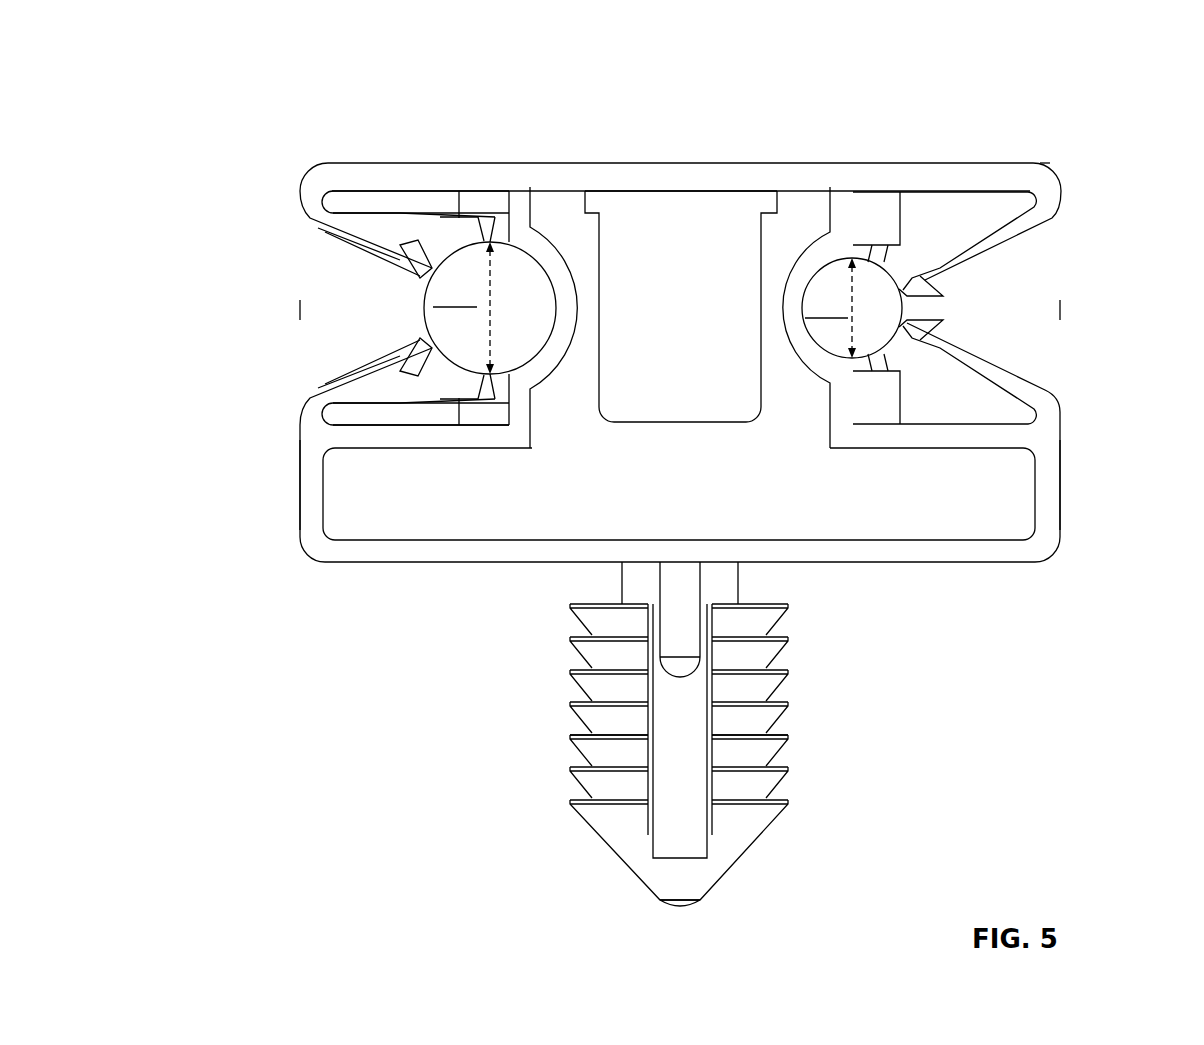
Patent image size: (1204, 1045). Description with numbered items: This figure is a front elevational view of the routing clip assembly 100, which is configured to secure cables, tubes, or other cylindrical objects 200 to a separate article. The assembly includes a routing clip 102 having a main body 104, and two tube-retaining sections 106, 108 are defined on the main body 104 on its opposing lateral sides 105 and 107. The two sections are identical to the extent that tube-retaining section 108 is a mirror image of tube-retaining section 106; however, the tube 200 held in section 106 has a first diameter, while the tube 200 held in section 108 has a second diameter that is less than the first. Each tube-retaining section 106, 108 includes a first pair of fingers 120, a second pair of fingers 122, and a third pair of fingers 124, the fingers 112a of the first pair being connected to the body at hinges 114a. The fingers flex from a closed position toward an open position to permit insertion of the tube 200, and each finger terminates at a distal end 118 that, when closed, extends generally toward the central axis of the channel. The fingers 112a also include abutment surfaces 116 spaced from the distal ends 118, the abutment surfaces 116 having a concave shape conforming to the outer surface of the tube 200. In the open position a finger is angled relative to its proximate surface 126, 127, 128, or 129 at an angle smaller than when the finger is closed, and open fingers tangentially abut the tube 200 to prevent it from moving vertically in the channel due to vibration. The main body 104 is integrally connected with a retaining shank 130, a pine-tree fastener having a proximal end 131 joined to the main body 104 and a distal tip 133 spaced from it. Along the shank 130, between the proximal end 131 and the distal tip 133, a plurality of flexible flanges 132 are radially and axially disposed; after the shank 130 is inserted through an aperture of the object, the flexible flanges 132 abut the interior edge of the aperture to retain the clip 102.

The routing clip assembly 100 is at (1100, 63).
The routing clip 102 is at (592, 180).
The main body 104 is at (788, 163).
The lateral side 105 is at (297, 460).
The tube-retaining section 106 is at (226, 279).
The lateral side 107 is at (1062, 490).
The tube-retaining section 108 is at (1118, 318).
The finger 112a is at (390, 222).
The hinge 114a is at (288, 163).
The abutment surface 116 is at (470, 215).
The distal end 118 is at (505, 245).
The first pair of fingers 120 is at (397, 237).
The second pair of fingers 122 is at (347, 240).
The third pair of fingers 124 is at (382, 250).
The proximate surface 126 is at (412, 198).
The proximate surface 127 is at (378, 420).
The proximate surface 128 is at (932, 202).
The proximate surface 129 is at (937, 425).
The retaining shank 130 is at (848, 709).
The proximal end 131 is at (742, 568).
The flexible flanges 132 is at (790, 738).
The distal tip 133 is at (680, 908).
The tube 200 is at (663, 308).